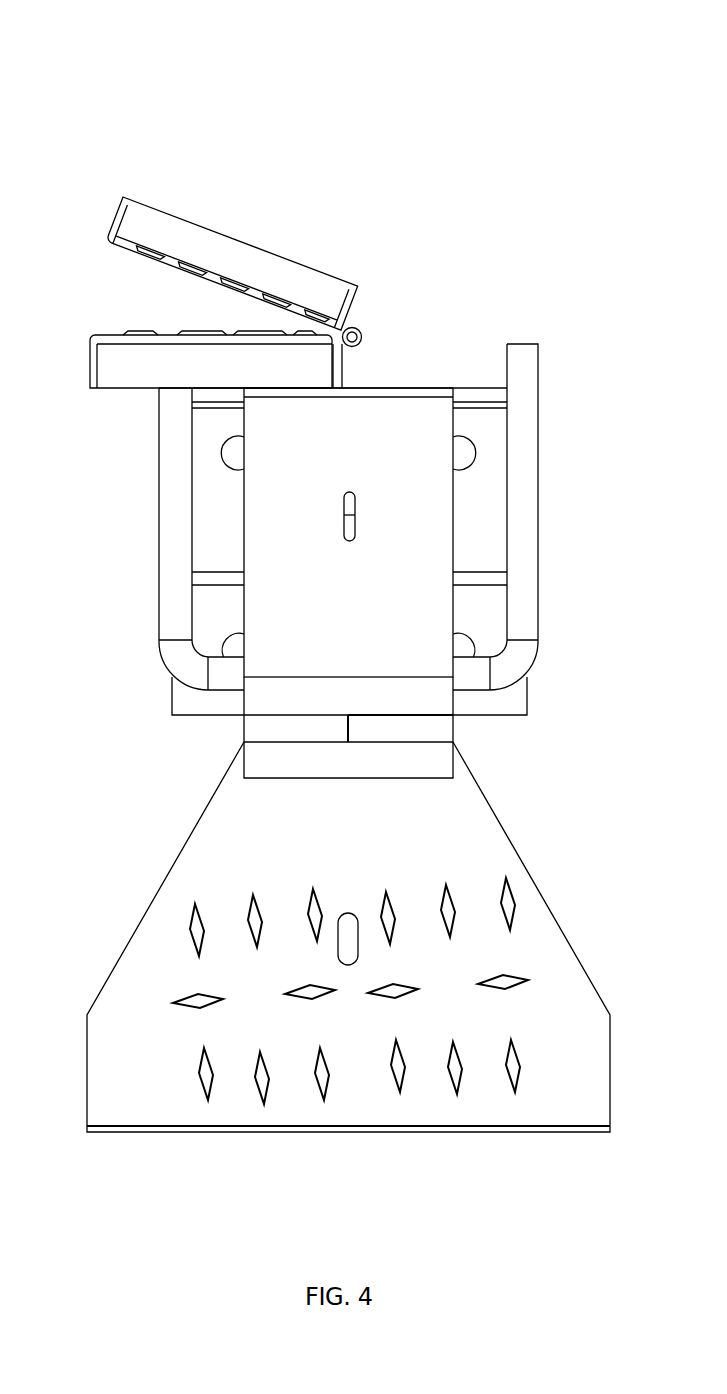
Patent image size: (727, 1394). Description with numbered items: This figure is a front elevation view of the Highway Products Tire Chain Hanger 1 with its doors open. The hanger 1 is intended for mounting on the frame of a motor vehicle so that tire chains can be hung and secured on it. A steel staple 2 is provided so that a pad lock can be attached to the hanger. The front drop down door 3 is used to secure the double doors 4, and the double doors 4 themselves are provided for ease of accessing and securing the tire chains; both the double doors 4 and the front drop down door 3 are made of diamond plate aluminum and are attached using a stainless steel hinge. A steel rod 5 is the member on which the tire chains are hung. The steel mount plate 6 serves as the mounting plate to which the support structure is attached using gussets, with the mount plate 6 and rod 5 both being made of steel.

The Highway Products Tire Chain Hanger 1 is at (324, 566).
The steel staple 2 is at (293, 598).
The front drop down door 3 is at (367, 937).
The double doors 4 is at (179, 267).
The steel rod 5 is at (291, 546).
The steel mount plate 6 is at (392, 741).